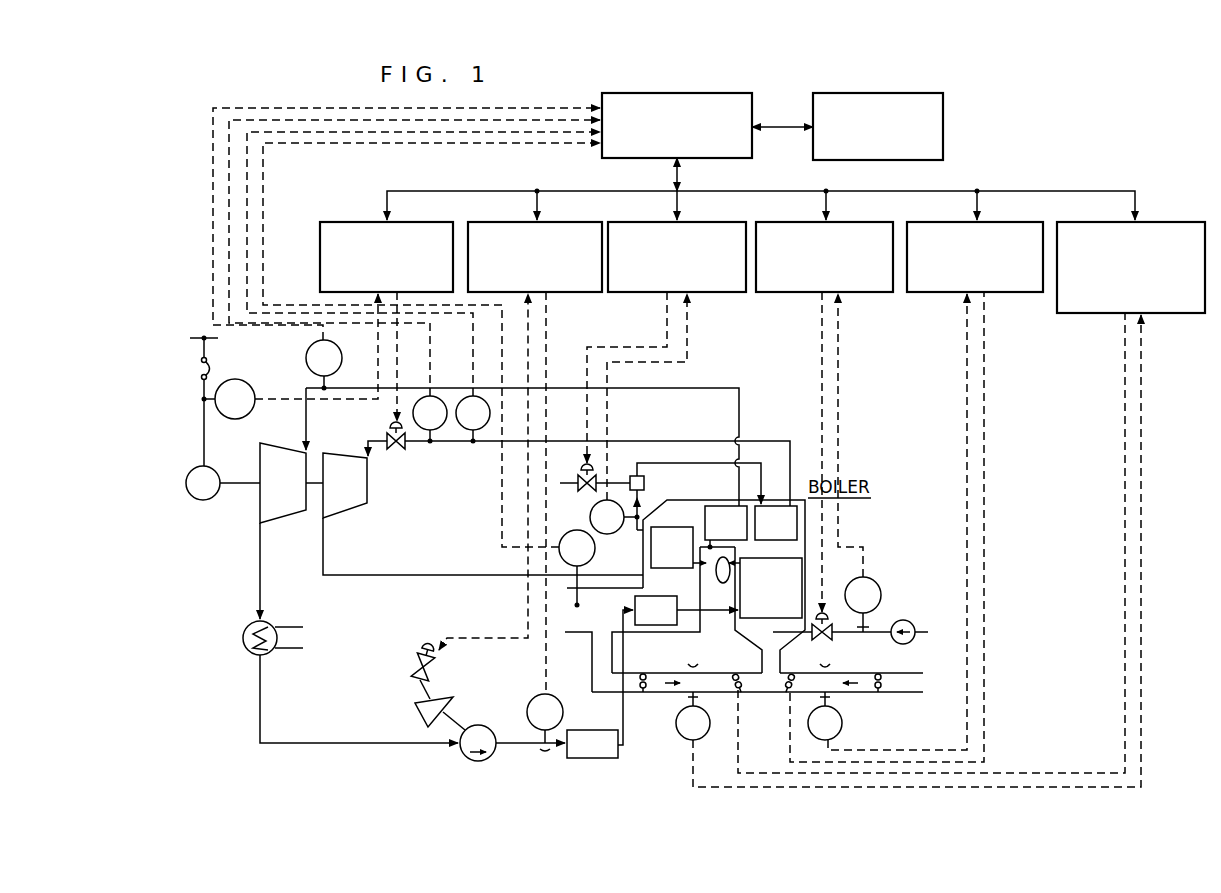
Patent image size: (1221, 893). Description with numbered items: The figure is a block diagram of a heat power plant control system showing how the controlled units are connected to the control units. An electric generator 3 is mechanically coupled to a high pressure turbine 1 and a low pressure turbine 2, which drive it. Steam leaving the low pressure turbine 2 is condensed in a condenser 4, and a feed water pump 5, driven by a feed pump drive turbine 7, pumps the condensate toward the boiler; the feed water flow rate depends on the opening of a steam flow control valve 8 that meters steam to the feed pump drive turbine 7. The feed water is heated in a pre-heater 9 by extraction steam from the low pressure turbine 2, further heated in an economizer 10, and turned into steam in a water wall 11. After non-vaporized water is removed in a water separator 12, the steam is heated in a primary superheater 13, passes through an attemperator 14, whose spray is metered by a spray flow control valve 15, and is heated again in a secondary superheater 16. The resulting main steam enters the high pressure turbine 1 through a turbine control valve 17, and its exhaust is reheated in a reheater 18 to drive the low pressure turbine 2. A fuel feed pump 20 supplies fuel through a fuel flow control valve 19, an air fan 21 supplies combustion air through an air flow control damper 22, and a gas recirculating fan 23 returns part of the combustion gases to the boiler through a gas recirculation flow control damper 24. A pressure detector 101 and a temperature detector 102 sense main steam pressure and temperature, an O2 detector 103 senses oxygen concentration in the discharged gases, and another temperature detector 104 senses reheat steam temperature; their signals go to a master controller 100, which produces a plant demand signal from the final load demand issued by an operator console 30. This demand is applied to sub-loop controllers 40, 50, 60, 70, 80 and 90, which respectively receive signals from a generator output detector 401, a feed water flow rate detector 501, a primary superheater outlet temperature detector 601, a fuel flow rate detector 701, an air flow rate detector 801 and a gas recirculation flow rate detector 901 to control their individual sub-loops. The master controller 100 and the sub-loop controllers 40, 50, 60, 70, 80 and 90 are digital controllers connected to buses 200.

The master controller 100 is at (665, 93).
The operator console 30 is at (885, 93).
The buses 200 is at (1060, 190).
The sub-loop controller 40 is at (402, 227).
The sub-loop controller 50 is at (550, 227).
The sub-loop controller 60 is at (692, 227).
The sub-loop controller 70 is at (842, 227).
The sub-loop controller 80 is at (995, 227).
The sub-loop controller 90 is at (1150, 227).
The high pressure turbine 1 is at (336, 454).
The low pressure turbine 2 is at (285, 443).
The electric generator 3 is at (195, 468).
The condenser 4 is at (246, 630).
The feed water pump 5 is at (486, 725).
The feed pump drive turbine 7 is at (415, 710).
The steam flow control valve 8 is at (412, 668).
The pre-heater 9 is at (593, 730).
The economizer 10 is at (656, 625).
The water wall 11 is at (768, 614).
The water separator 12 is at (723, 583).
The primary superheater 13 is at (673, 527).
The attemperator 14 is at (630, 479).
The spray flow control valve 15 is at (578, 480).
The secondary superheater 16 is at (776, 506).
The turbine control valve 17 is at (397, 448).
The reheater 18 is at (716, 506).
The fuel flow control valve 19 is at (823, 638).
The fuel feed pump 20 is at (908, 621).
The air fan 21 is at (879, 691).
The air flow control damper 22 is at (789, 694).
The gas recirculating fan 23 is at (643, 692).
The gas recirculation flow control damper 24 is at (739, 693).
The pressure detector 101 is at (424, 397).
The temperature detector 102 is at (467, 397).
The O2 detector 103 is at (568, 535).
The temperature detector 104 is at (308, 352).
The generator output detector 401 is at (236, 379).
The feed water flow rate detector 501 is at (540, 695).
The primary superheater outlet temperature detector 601 is at (618, 530).
The fuel flow rate detector 701 is at (876, 585).
The air flow rate detector 801 is at (842, 723).
The gas recirculation flow rate detector 901 is at (676, 723).